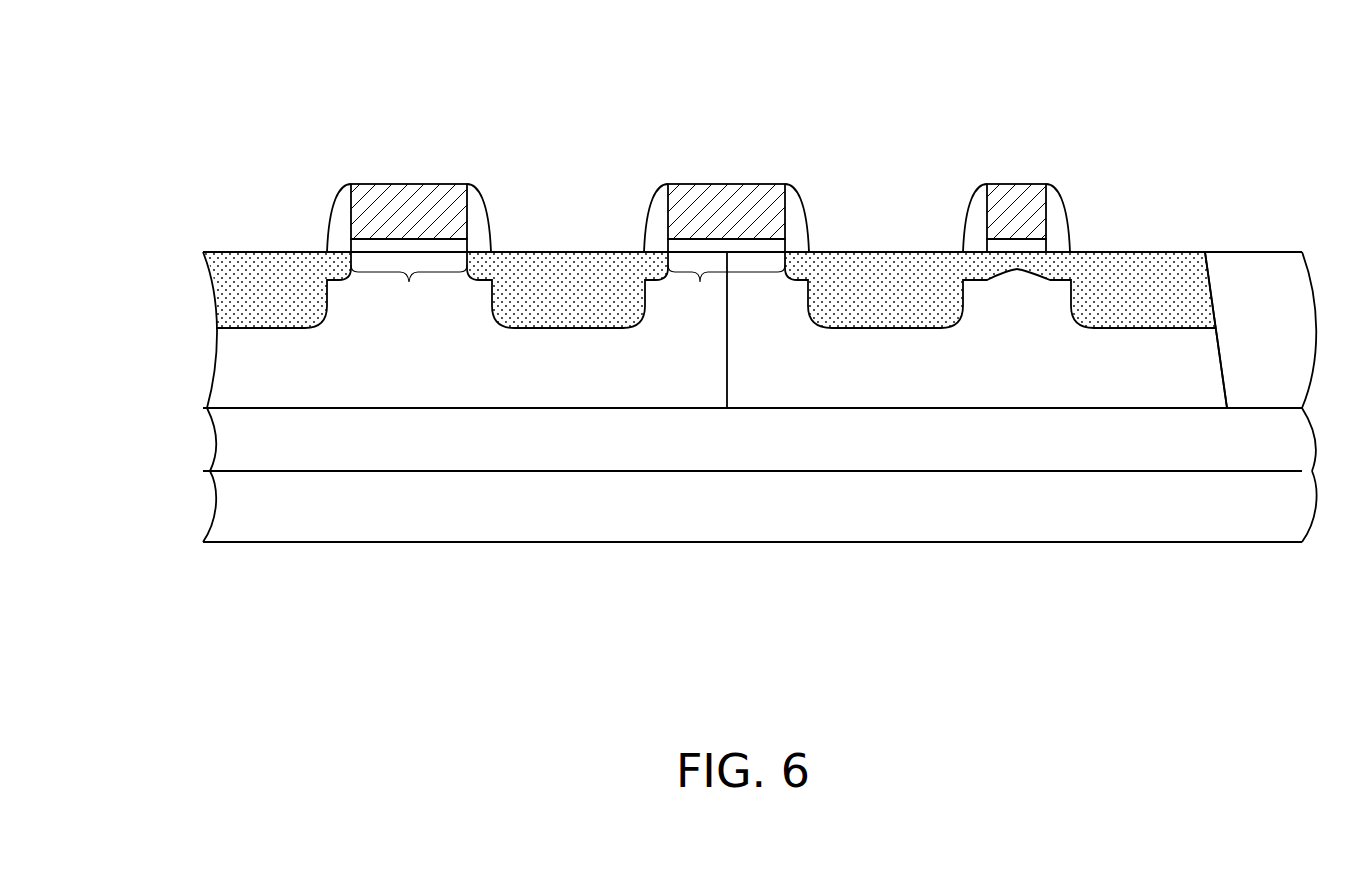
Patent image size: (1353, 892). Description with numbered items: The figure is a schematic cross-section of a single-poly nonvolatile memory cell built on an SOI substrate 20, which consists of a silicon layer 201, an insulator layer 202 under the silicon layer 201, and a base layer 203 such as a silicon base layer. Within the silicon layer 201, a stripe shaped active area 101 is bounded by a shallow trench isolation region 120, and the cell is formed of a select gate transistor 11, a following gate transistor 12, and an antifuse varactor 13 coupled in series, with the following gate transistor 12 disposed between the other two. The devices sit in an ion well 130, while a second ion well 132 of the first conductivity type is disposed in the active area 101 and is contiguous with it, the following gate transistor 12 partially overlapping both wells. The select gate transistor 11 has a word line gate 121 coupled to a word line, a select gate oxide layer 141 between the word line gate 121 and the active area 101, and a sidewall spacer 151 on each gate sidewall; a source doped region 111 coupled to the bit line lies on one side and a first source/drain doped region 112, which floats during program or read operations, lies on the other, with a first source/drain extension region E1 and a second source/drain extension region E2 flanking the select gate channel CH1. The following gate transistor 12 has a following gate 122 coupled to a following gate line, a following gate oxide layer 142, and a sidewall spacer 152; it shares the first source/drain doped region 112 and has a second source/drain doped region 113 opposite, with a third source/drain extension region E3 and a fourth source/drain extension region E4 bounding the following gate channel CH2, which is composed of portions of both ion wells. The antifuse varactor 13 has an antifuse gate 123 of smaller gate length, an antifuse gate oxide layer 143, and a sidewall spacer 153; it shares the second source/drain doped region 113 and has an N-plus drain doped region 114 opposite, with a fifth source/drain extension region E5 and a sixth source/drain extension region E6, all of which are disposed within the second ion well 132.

The select gate transistor 11 is at (490, 152).
The following gate transistor 12 is at (811, 152).
The antifuse varactor 13 is at (1071, 152).
The SOI substrate 20 is at (168, 484).
The active area 101 is at (1213, 562).
The source doped region 111 is at (237, 307).
The first source/drain doped region 112 is at (544, 307).
The second source/drain doped region 113 is at (864, 307).
The drain doped region 114 is at (1122, 307).
The shallow trench isolation region 120 is at (1242, 350).
The word line gate 121 is at (408, 200).
The following gate 122 is at (728, 200).
The antifuse gate 123 is at (1013, 200).
The ion well 130 is at (529, 395).
The second ion well 132 is at (866, 395).
The select gate oxide layer 141 is at (457, 247).
The following gate oxide layer 142 is at (772, 247).
The antifuse gate oxide layer 143 is at (1032, 247).
The sidewall spacer 151 is at (340, 223).
The sidewall spacer 152 is at (658, 223).
The sidewall spacer 153 is at (977, 223).
The silicon layer 201 is at (188, 408).
The insulator layer 202 is at (866, 455).
The base layer 203 is at (866, 520).
The first source/drain extension region E1 is at (335, 270).
The second source/drain extension region E2 is at (482, 270).
The third source/drain extension region E3 is at (655, 270).
The fourth source/drain extension region E4 is at (800, 270).
The fifth source/drain extension region E5 is at (982, 270).
The sixth source/drain extension region E6 is at (1053, 270).
The select gate channel CH1 is at (409, 294).
The following gate channel CH2 is at (726, 294).